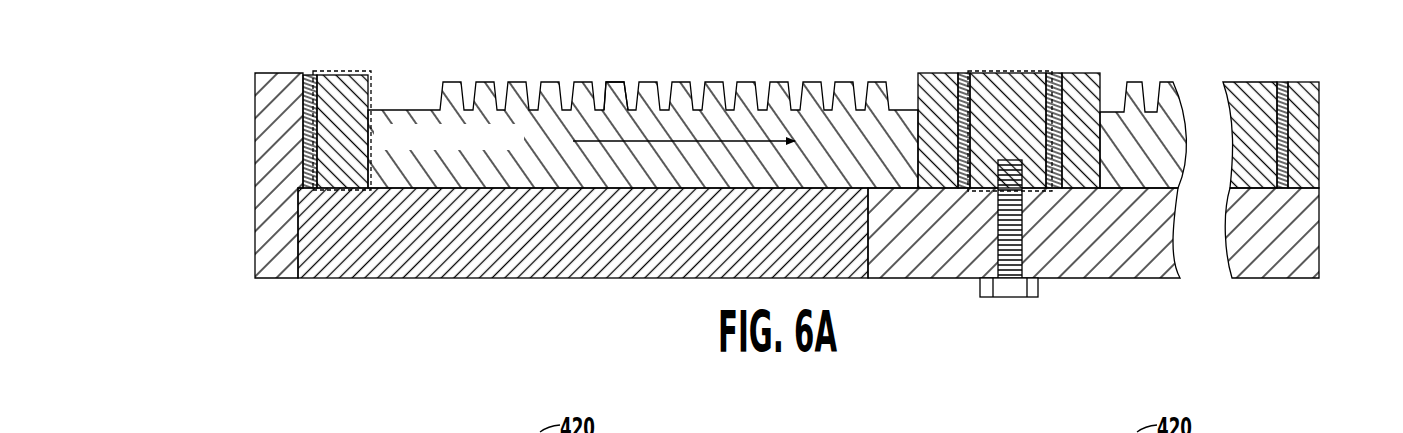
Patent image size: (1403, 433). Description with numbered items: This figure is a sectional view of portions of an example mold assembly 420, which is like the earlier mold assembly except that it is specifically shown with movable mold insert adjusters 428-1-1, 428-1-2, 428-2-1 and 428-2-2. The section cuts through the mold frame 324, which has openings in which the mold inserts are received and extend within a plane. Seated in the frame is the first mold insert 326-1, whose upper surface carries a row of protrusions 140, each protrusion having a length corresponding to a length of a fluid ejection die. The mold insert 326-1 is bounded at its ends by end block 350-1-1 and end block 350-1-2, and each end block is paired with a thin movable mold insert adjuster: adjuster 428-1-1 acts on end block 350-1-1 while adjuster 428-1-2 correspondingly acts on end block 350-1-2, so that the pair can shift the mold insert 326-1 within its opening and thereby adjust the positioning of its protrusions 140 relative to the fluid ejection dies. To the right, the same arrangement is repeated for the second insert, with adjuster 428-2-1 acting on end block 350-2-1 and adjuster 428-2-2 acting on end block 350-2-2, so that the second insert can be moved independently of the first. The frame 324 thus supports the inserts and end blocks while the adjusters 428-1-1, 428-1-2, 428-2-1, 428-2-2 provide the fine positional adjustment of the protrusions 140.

The mold assembly 420 is at (210, 94).
The mold frame 324 is at (262, 187).
The movable mold insert adjuster 428-1-1 is at (316, 74).
The movable mold insert adjuster 428-1-2 is at (963, 73).
The movable mold insert adjuster 428-2-1 is at (1053, 73).
The movable mold insert adjuster 428-2-2 is at (1282, 88).
The end block 350-1-1 is at (347, 152).
The end block 350-1-2 is at (940, 165).
The end block 350-2-1 is at (1085, 163).
The end block 350-2-2 is at (1250, 90).
The mold insert 326-1 is at (558, 70).
The protrusions 140 is at (622, 88).